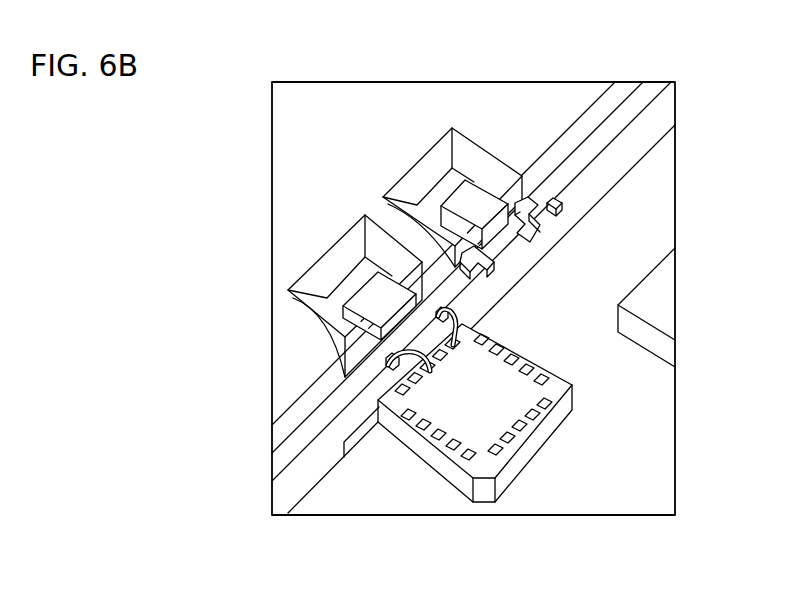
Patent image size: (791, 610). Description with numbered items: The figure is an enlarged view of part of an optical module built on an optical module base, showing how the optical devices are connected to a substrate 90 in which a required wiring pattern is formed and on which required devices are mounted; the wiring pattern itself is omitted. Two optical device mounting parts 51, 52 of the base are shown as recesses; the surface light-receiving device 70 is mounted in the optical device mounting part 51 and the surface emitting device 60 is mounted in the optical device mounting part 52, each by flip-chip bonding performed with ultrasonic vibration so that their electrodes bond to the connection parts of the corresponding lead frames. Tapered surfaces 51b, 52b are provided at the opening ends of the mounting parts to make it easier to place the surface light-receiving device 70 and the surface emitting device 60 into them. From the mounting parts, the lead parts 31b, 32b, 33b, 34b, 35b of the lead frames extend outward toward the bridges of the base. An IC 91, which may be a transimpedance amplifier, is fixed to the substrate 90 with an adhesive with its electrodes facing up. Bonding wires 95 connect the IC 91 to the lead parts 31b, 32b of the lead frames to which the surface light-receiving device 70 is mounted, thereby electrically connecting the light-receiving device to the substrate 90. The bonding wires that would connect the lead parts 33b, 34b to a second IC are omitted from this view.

The substrate 90 is at (652, 460).
The optical device mounting part 51 is at (323, 238).
The tapered surface 51b is at (328, 297).
The optical device mounting part 52 is at (417, 150).
The tapered surface 52b is at (503, 175).
The surface emitting device 60 is at (482, 201).
The surface light-receiving device 70 is at (372, 292).
The lead part 31b is at (393, 349).
The lead part 32b is at (418, 303).
The lead part 33b is at (473, 261).
The lead part 34b is at (562, 206).
The lead part 35b is at (540, 196).
The IC 91 is at (505, 418).
The bonding wires 95 is at (457, 338).